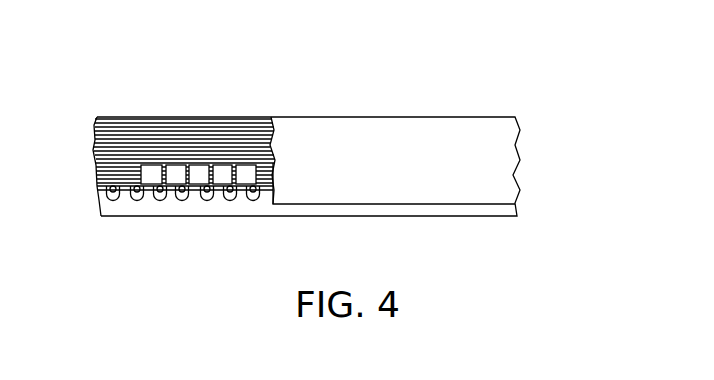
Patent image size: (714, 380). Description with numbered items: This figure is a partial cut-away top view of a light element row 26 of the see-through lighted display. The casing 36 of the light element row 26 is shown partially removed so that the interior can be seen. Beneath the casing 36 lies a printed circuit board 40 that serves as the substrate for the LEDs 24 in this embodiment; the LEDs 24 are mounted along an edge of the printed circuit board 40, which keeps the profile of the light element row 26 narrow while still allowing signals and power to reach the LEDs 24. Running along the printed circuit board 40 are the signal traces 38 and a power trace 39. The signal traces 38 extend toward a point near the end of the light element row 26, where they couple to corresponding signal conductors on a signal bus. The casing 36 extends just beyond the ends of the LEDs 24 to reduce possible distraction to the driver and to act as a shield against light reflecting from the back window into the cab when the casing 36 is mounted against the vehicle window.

The light element row 26 is at (385, 103).
The casing 36 is at (409, 167).
The signal traces 38 is at (93, 137).
The LEDs 24 is at (184, 198).
The printed circuit board 40 is at (244, 170).
The power trace 39 is at (124, 199).